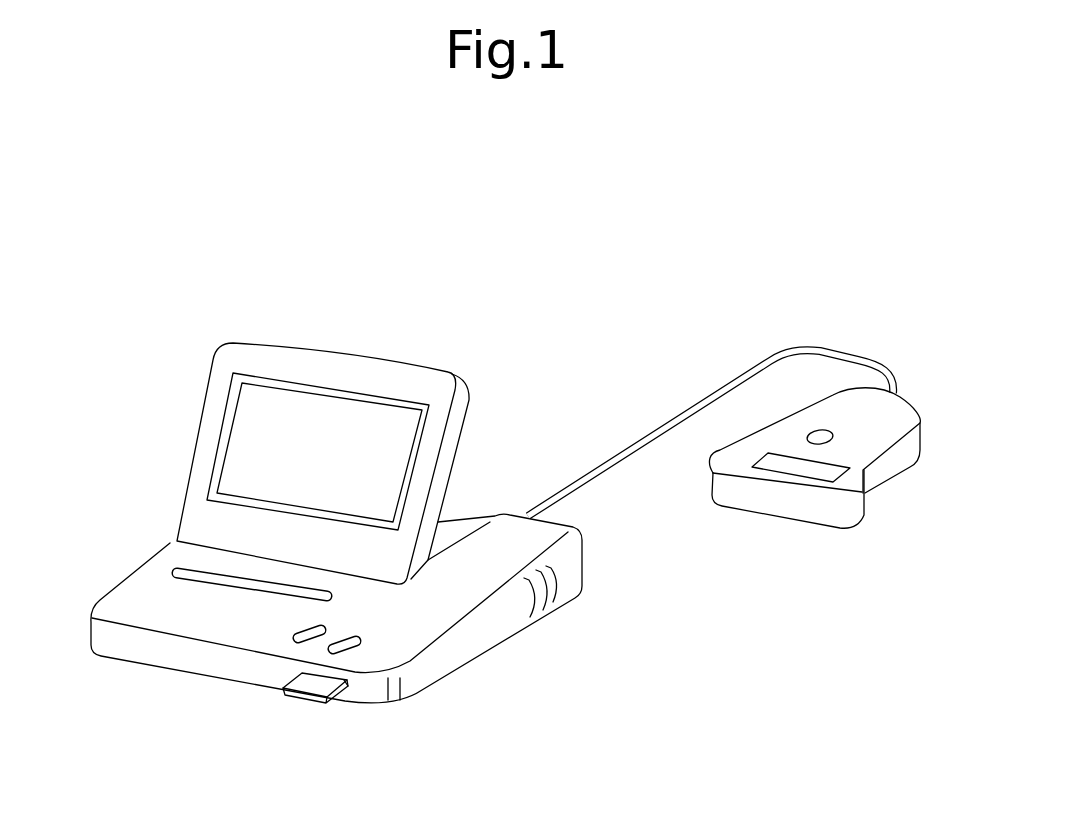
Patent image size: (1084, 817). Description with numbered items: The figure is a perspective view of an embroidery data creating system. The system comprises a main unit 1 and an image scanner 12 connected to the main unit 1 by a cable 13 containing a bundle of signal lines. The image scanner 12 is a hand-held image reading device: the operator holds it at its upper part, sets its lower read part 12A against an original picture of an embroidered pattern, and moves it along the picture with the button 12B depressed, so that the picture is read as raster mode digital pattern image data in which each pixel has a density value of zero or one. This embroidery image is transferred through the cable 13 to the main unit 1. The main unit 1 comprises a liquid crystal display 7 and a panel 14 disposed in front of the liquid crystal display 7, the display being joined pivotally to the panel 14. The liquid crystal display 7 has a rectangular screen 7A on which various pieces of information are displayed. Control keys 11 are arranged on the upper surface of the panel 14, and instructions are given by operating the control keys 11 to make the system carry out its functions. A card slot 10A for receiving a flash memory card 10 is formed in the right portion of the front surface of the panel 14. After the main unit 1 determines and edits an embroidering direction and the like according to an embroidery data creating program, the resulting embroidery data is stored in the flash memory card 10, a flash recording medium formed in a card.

The main unit 1 is at (149, 425).
The liquid crystal display 7 is at (362, 367).
The rectangular screen 7A is at (293, 408).
The flash memory card 10 is at (303, 684).
The card slot 10A is at (347, 683).
The control keys 11 is at (357, 643).
The image scanner 12 is at (885, 465).
The lower read part 12A is at (773, 508).
The button 12B is at (840, 433).
The cable 13 is at (623, 457).
The panel 14 is at (170, 607).